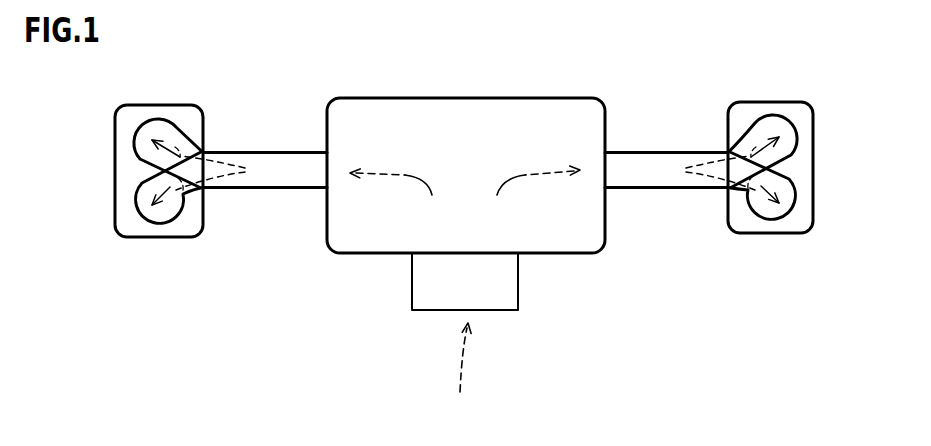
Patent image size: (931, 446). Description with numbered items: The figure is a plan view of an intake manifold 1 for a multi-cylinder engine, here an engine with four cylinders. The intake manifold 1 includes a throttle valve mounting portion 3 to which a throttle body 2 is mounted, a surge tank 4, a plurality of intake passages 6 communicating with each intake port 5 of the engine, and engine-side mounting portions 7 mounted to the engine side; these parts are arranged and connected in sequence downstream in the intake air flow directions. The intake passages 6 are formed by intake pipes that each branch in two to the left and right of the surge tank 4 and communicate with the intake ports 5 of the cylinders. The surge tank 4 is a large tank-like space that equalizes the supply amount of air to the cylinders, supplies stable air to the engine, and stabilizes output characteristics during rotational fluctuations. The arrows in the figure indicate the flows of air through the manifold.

The intake manifold 1 is at (580, 77).
The throttle body 2 is at (498, 293).
The throttle valve mounting portion 3 is at (487, 255).
The surge tank 4 is at (520, 113).
The intake port 5 is at (145, 152).
The intake passage 6 is at (201, 190).
The engine-side mounting portion 7 is at (125, 134).